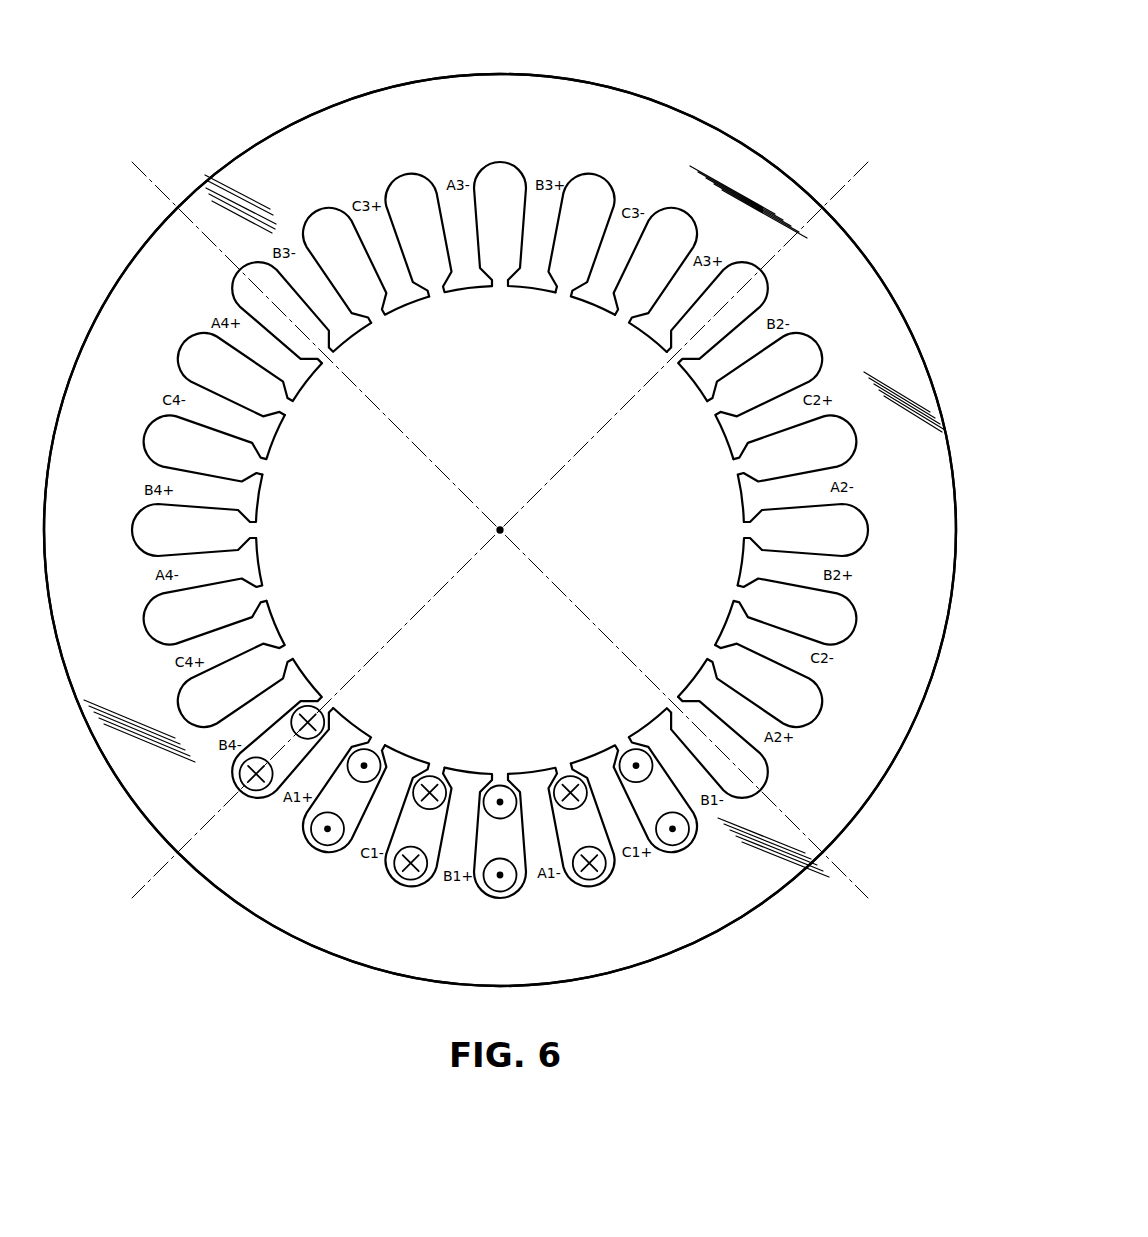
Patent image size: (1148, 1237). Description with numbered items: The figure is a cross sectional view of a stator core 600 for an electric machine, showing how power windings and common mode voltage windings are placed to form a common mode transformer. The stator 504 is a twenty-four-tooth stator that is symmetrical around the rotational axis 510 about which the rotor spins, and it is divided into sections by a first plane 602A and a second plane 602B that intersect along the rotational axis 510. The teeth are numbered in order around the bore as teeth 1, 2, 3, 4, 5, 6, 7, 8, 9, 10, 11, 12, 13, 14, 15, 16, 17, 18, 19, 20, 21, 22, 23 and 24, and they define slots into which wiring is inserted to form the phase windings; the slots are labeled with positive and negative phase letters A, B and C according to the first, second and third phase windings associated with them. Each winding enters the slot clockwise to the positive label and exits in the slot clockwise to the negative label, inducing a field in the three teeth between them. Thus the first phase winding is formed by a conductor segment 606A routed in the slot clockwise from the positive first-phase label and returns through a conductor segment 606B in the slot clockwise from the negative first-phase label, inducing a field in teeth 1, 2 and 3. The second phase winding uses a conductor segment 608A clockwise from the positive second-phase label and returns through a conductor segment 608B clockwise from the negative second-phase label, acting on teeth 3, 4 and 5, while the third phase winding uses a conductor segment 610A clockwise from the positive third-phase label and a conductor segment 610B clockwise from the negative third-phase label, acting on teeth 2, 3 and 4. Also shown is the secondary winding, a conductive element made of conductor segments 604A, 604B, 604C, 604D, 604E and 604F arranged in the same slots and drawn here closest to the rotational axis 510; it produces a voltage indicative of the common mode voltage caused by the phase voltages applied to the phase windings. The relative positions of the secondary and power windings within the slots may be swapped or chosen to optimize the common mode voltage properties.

The stator core 600 is at (778, 48).
The stator 504 is at (871, 259).
The rotational axis 510 is at (503, 526).
The first plane 602A is at (405, 624).
The second plane 602B is at (597, 624).
The conductor segment 604A is at (316, 704).
The conductor segment 604B is at (373, 750).
The conductor segment 604C is at (434, 776).
The conductor segment 604D is at (501, 800).
The conductor segment 604E is at (567, 776).
The conductor segment 604F is at (628, 750).
The conductor segment 606A is at (256, 792).
The conductor segment 606B is at (502, 892).
The conductor segment 608A is at (412, 881).
The conductor segment 608B is at (678, 846).
The conductor segment 610A is at (590, 881).
The conductor segment 610B is at (335, 846).
The stator tooth 1 is at (276, 734).
The stator tooth 2 is at (337, 785).
The stator tooth 3 is at (410, 818).
The stator tooth 4 is at (491, 833).
The stator tooth 5 is at (564, 826).
The stator tooth 6 is at (639, 800).
The stator tooth 7 is at (704, 754).
The stator tooth 8 is at (755, 691).
The stator tooth 9 is at (788, 617).
The stator tooth 10 is at (803, 537).
The stator tooth 11 is at (796, 466).
The stator tooth 12 is at (770, 391).
The stator tooth 13 is at (723, 326).
The stator tooth 14 is at (661, 275).
The stator tooth 15 is at (587, 241).
The stator tooth 16 is at (506, 227).
The stator tooth 17 is at (436, 233).
The stator tooth 18 is at (361, 261).
The stator tooth 19 is at (296, 306).
The stator tooth 20 is at (245, 368).
The stator tooth 21 is at (211, 442).
The stator tooth 22 is at (197, 523).
The stator tooth 23 is at (203, 594).
The stator tooth 24 is at (231, 669).